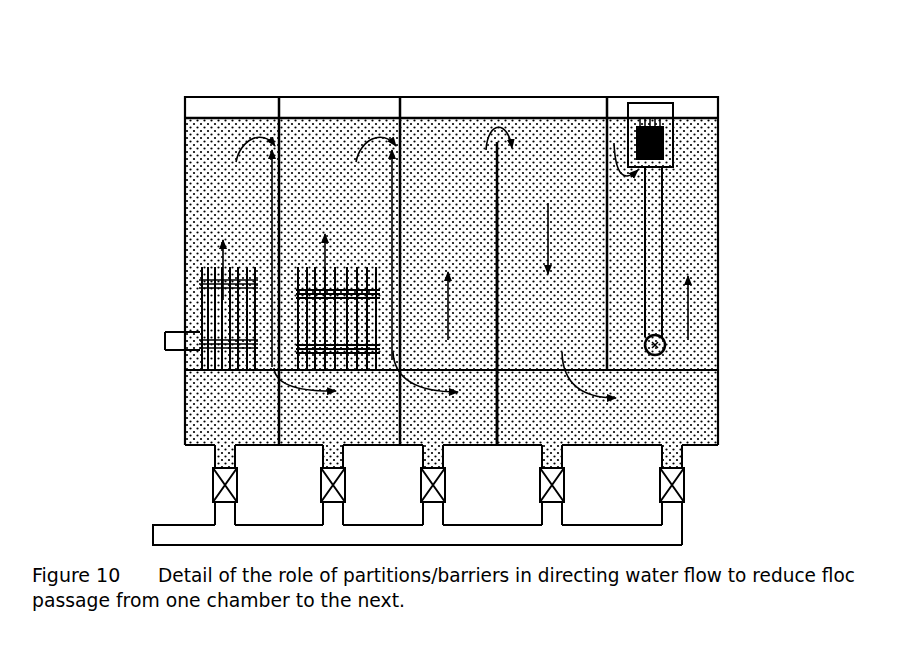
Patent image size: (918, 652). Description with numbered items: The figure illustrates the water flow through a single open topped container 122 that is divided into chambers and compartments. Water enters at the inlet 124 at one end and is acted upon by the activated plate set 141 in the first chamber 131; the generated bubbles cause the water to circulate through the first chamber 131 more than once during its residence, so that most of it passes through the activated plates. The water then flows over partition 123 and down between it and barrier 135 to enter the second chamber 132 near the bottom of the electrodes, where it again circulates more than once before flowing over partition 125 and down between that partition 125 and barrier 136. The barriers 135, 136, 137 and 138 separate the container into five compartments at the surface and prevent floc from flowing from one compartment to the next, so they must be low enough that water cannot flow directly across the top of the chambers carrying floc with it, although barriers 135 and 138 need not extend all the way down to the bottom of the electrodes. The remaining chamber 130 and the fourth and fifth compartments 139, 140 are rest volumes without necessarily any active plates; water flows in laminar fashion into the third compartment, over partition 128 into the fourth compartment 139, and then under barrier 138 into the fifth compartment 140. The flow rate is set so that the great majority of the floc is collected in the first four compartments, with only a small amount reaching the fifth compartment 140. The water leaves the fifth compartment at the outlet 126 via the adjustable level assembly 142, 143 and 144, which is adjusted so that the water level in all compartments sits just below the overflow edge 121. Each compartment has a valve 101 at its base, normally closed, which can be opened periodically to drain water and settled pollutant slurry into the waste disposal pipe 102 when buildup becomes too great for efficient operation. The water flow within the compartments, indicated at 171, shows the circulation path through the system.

The valve 101 is at (240, 483).
The waste disposal pipe 102 is at (386, 533).
The overflow edge 121 is at (272, 117).
The open topped container 122 is at (181, 107).
The partition 123 is at (266, 177).
The inlet 124 is at (162, 343).
The partition 125 is at (390, 201).
The outlet 126 is at (667, 348).
The partition 128 is at (497, 272).
The chamber 130 is at (443, 192).
The first chamber 131 is at (228, 193).
The second chamber 132 is at (334, 192).
The barrier 135 is at (283, 108).
The barrier 136 is at (401, 107).
The barrier 137 is at (487, 108).
The barrier 138 is at (609, 108).
The fourth compartment 139 is at (545, 191).
The fifth compartment 140 is at (679, 192).
The activated plate set 141 is at (223, 354).
The adjustable level assembly 142 is at (677, 104).
The adjustable level assembly 143 is at (638, 157).
The adjustable level assembly 144 is at (665, 221).
The water flow 171 is at (569, 312).